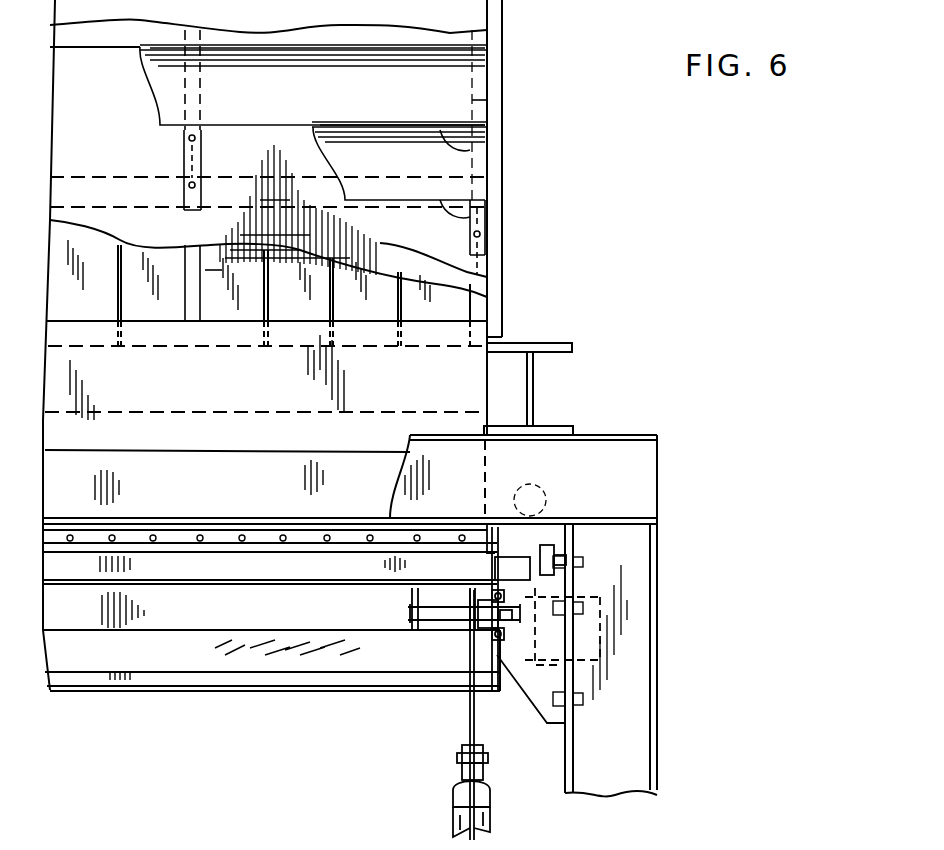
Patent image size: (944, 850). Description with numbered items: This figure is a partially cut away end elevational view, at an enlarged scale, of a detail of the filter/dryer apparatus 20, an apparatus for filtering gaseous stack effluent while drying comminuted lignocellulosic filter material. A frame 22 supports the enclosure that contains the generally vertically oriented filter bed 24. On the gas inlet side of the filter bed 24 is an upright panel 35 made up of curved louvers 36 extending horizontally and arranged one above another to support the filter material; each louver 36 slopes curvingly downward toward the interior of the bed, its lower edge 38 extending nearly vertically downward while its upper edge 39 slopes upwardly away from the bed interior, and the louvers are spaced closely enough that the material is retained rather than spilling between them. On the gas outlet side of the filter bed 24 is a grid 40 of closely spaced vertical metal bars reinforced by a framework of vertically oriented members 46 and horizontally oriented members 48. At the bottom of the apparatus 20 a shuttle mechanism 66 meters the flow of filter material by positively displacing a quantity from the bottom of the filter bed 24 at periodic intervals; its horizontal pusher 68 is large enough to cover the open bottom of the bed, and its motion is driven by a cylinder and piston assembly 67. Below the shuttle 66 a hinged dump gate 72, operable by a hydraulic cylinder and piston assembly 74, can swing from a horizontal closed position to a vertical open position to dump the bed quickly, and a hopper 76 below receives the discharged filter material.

The filter/dryer apparatus 20 is at (548, 318).
The frame 22 is at (662, 712).
The filter bed 24 is at (448, 93).
The upright panel 35 is at (455, 112).
The curved louver 36 is at (398, 92).
The lower edge 38 is at (467, 150).
The upper edge 39 is at (388, 45).
The grid 40 is at (487, 277).
The vertically oriented framework member 46 is at (265, 270).
The horizontally oriented framework member 48 is at (153, 207).
The shuttle mechanism 66 is at (512, 555).
The cylinder and piston assembly 67 is at (545, 490).
The horizontal pusher 68 is at (278, 577).
The dump gate 72 is at (316, 624).
The hydraulic cylinder and piston assembly 74 is at (452, 813).
The hopper 76 is at (280, 655).